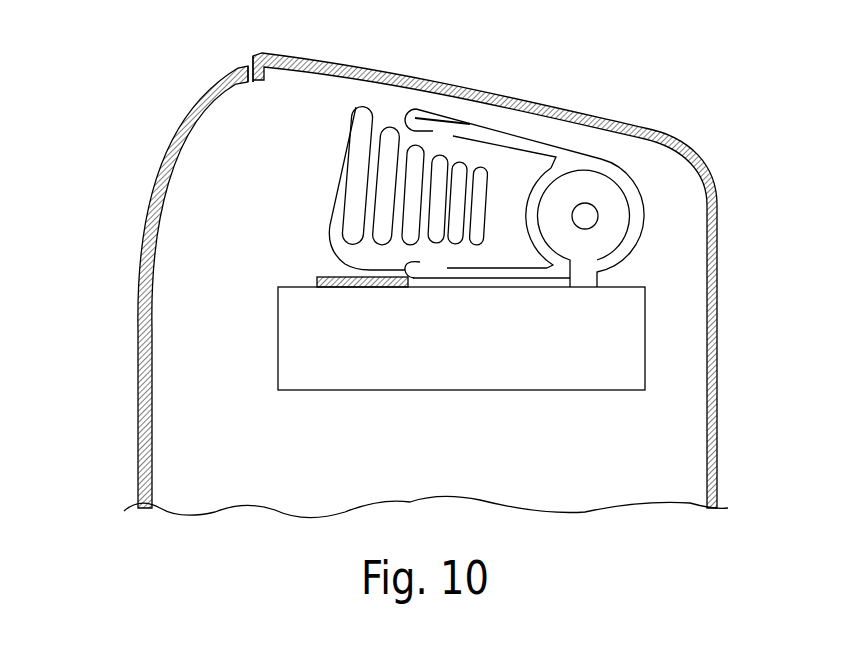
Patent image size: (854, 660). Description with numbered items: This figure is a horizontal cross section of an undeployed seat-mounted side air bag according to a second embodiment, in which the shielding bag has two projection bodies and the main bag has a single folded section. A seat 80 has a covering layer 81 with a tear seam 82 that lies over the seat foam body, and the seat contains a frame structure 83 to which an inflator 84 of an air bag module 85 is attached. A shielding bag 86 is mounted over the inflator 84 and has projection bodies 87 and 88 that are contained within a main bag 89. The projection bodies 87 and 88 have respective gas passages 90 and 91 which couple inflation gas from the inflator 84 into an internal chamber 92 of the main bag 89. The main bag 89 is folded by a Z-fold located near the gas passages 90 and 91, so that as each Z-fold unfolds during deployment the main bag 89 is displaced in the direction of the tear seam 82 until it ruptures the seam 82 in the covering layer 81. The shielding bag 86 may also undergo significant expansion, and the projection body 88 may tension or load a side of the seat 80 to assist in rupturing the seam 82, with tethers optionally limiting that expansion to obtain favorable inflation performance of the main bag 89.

The seat 80 is at (378, 263).
The covering layer 81 is at (137, 422).
The tear seam 82 is at (251, 66).
The frame structure 83 is at (475, 392).
The inflator 84 is at (611, 212).
The air bag module 85 is at (469, 194).
The shielding bag 86 is at (612, 162).
The projection body 87 is at (511, 274).
The projection body 88 is at (516, 140).
The main bag 89 is at (347, 143).
The gas passage 90 is at (434, 267).
The gas passage 91 is at (439, 132).
The internal chamber 92 is at (499, 207).